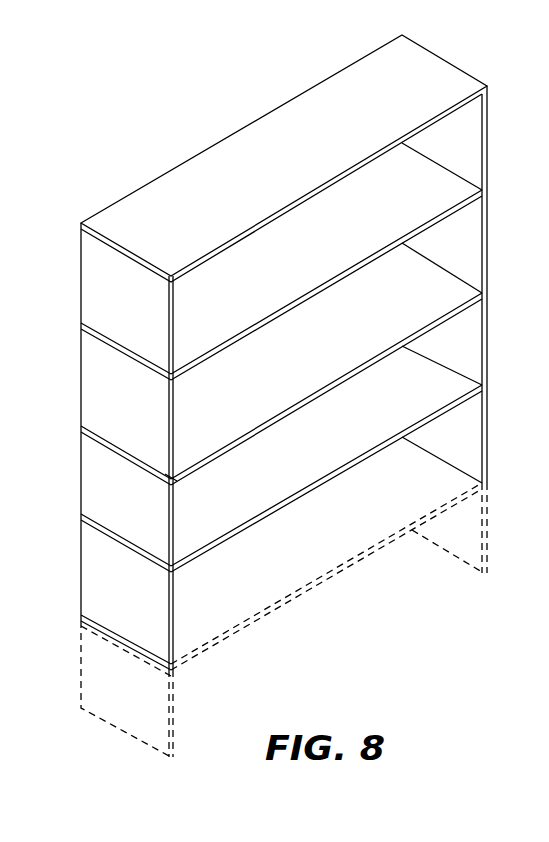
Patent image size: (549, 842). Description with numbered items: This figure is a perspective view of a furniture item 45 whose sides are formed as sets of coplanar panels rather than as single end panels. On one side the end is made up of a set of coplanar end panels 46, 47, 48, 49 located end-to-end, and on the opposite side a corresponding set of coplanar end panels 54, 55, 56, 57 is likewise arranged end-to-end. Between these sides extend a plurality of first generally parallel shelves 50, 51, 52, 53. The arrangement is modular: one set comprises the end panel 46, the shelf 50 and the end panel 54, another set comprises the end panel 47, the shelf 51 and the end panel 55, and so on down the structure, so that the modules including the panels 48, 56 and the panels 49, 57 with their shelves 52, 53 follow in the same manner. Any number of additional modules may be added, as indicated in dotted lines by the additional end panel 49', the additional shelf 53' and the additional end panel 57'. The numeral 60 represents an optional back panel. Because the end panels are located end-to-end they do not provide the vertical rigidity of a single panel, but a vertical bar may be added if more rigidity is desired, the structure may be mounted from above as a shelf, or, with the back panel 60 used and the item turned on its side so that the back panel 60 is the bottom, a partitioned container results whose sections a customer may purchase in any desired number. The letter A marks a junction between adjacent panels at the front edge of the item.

The furniture item 45 is at (66, 452).
The coplanar end panel 46 is at (132, 301).
The coplanar end panel 47 is at (138, 407).
The coplanar end panel 48 is at (138, 502).
The coplanar end panel 49 is at (126, 629).
The additional end panel 49' is at (127, 689).
The shelf 50 is at (294, 171).
The shelf 51 is at (318, 247).
The shelf 52 is at (327, 356).
The shelf 53 is at (326, 478).
The additional shelf 53' is at (326, 573).
The coplanar end panel 54 is at (462, 157).
The coplanar end panel 55 is at (462, 254).
The coplanar end panel 56 is at (464, 354).
The coplanar end panel 57 is at (442, 451).
The additional end panel 57' is at (449, 528).
The back panel 60 is at (345, 583).
The corner joint A is at (181, 483).